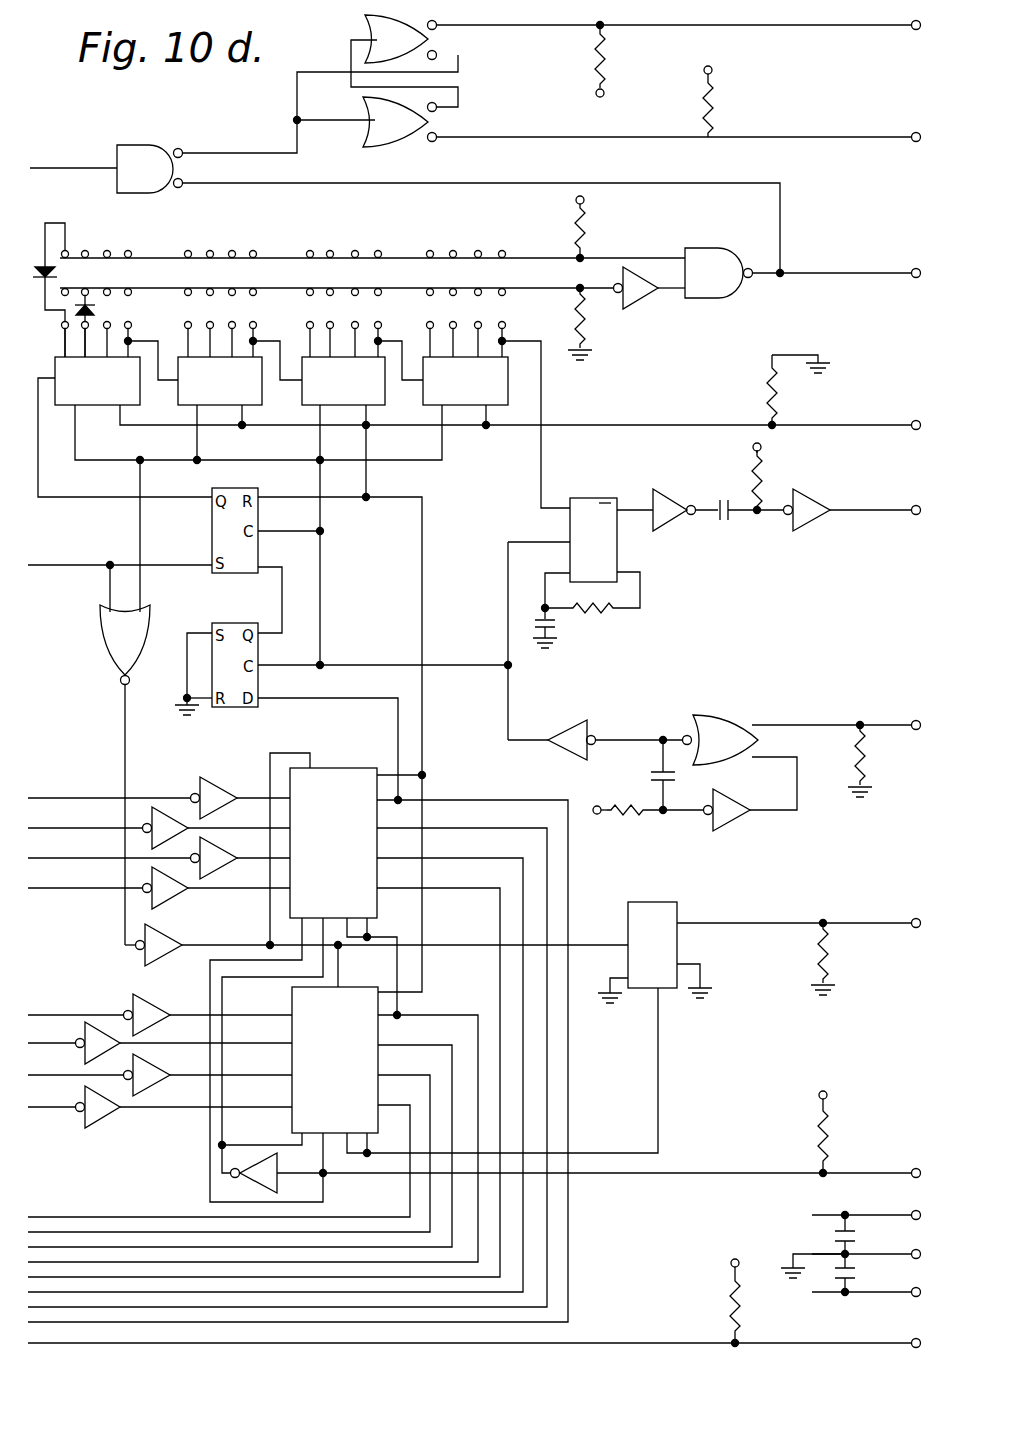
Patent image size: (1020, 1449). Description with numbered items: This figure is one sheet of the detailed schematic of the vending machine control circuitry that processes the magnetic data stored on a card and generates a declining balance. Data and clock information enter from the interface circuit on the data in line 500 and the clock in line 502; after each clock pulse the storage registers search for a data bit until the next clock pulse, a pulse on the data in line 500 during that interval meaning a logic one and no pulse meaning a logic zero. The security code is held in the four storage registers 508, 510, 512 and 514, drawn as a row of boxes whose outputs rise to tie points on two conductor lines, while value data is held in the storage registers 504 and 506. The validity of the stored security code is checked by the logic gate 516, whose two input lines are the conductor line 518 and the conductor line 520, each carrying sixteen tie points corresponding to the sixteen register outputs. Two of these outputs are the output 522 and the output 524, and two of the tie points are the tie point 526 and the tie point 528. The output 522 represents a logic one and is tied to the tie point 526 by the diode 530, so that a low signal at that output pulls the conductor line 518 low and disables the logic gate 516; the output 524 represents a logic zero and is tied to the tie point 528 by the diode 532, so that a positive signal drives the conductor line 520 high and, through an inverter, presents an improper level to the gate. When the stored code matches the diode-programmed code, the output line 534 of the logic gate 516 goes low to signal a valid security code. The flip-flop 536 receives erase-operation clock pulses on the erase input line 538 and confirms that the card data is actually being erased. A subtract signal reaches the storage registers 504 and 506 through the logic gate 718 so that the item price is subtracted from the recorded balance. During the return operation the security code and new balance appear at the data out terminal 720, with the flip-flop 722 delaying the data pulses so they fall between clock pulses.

The flip-flop 536 is at (343, 58).
The erase input line 538 is at (702, 28).
The tie point 526 is at (68, 250).
The diode 530 is at (62, 270).
The tie point 528 is at (88, 290).
The diode 532 is at (98, 306).
The security code register output 522 is at (66, 358).
The security code register output 524 is at (86, 358).
The security code storage register 508 is at (97, 388).
The security code storage register 510 is at (262, 405).
The security code storage register 512 is at (385, 405).
The security code storage register 514 is at (502, 405).
The conductor line 518 is at (552, 254).
The conductor line 520 is at (552, 292).
The logic gate 516 is at (705, 250).
The output line 534 is at (805, 273).
The flip-flop 722 is at (587, 498).
The data out terminal 720 is at (882, 514).
The logic gate 718 is at (100, 642).
The clock in line 502 is at (884, 728).
The value data storage register 504 is at (340, 768).
The data in line 500 is at (882, 927).
The value data storage register 506 is at (290, 1116).